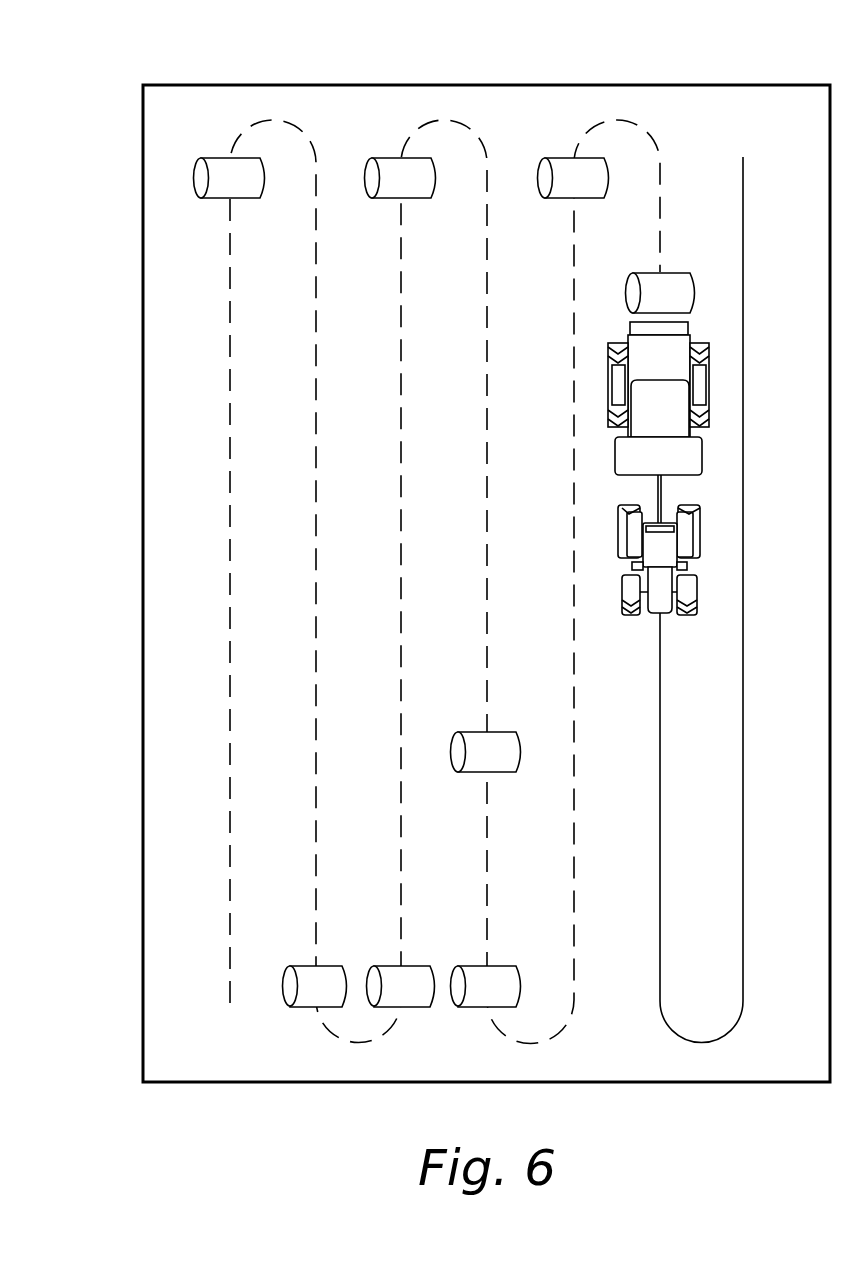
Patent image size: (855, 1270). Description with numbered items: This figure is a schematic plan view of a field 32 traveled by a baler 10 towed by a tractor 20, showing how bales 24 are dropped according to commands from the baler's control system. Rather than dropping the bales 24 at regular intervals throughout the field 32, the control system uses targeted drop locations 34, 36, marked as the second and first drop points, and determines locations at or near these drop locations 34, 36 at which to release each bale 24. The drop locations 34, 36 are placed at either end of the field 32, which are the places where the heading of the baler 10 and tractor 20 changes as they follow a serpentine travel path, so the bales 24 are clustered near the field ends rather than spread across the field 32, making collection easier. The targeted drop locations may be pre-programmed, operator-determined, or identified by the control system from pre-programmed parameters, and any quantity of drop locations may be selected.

The baler 10 is at (680, 398).
The tractor 20 is at (673, 548).
The bale 24 is at (253, 198).
The field 32 is at (763, 85).
The targeted drop location 34 is at (124, 133).
The targeted drop location 36 is at (124, 1019).